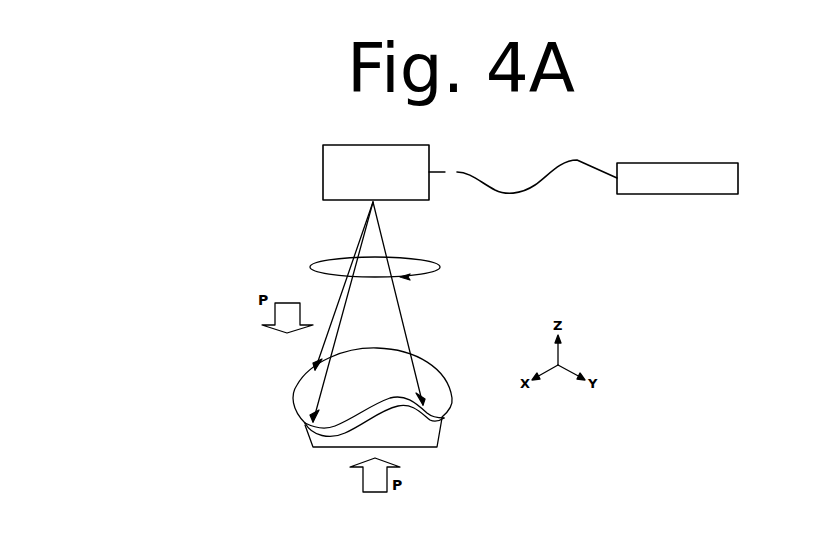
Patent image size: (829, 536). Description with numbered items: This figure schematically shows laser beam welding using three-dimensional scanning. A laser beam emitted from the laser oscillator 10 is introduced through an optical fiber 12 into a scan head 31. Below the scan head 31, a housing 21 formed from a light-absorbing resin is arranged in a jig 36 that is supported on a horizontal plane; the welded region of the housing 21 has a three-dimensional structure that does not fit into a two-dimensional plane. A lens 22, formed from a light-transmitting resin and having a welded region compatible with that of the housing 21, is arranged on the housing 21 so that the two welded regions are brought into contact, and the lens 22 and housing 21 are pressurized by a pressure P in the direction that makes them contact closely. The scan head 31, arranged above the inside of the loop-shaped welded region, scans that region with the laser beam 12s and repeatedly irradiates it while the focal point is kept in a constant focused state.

The scan head 31 is at (429, 155).
The optical fiber 12 is at (497, 190).
The laser oscillator 10 is at (671, 163).
The laser beam 12s is at (403, 316).
The lens 22 is at (446, 375).
The housing 21 is at (445, 418).
The jig 36 is at (439, 439).